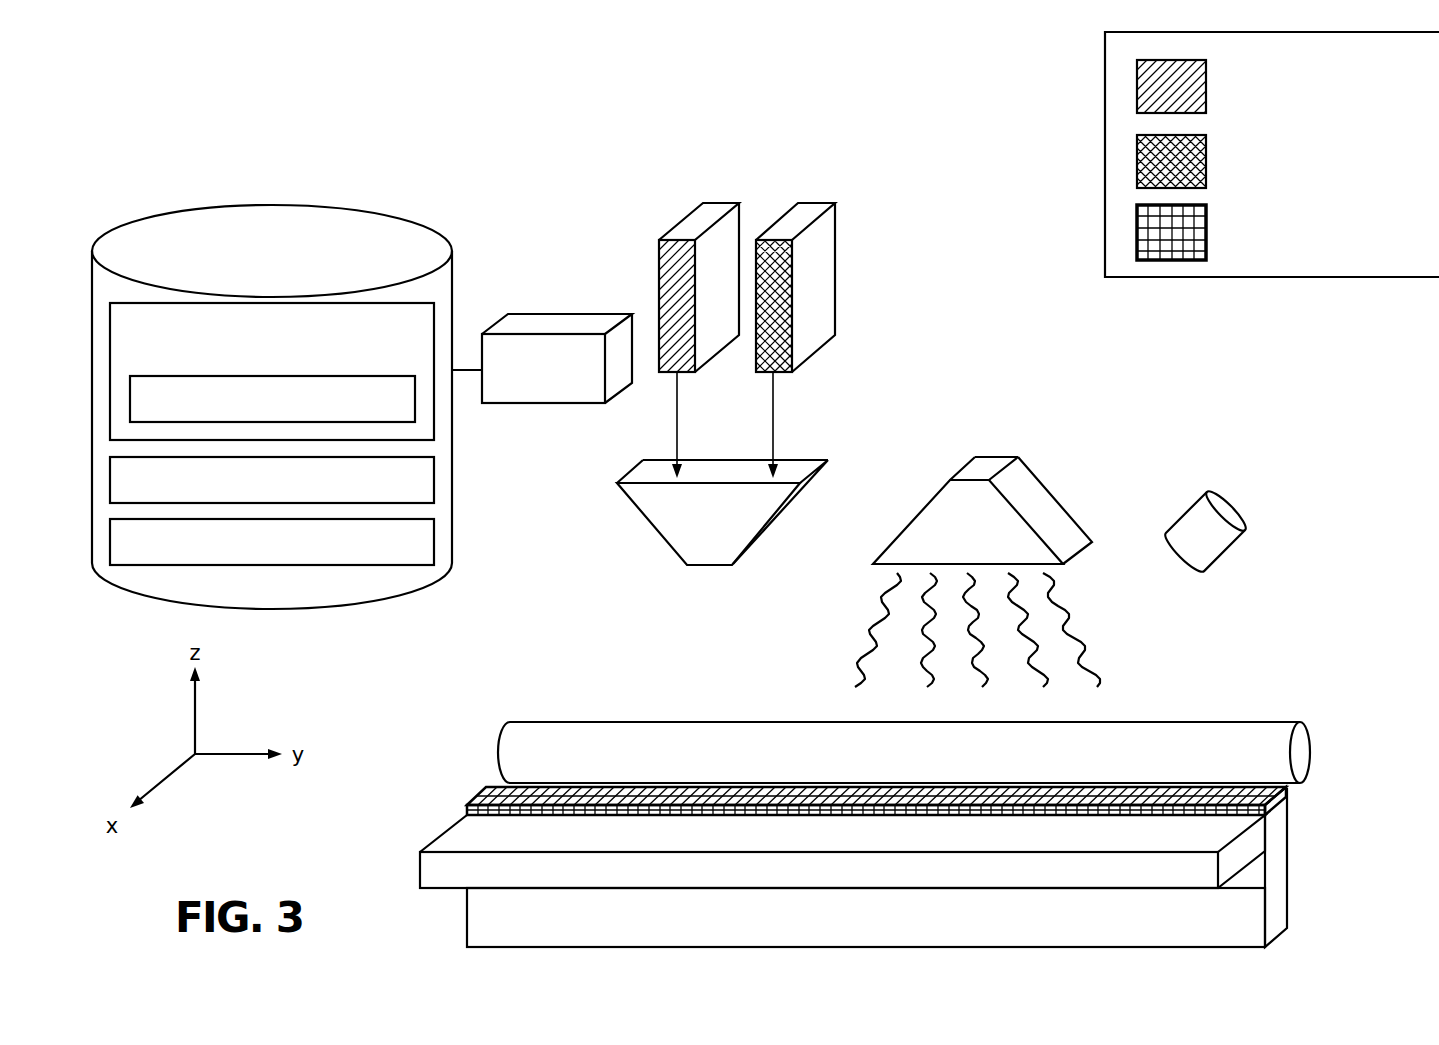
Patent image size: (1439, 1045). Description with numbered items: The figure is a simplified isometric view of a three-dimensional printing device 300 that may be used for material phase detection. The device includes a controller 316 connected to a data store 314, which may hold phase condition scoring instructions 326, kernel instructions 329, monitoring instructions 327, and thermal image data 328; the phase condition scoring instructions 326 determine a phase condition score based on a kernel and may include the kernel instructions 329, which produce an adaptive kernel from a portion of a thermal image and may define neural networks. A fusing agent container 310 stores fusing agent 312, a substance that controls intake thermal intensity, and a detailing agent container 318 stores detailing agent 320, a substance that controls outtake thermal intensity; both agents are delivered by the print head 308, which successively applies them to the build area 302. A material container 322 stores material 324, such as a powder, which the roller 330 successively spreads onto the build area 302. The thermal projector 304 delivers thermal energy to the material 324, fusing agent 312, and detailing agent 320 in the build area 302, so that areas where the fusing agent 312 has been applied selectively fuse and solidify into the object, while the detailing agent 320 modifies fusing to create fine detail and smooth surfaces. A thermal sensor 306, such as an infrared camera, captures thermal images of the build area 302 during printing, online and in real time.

The 3D printing device 300 is at (236, 143).
The data store 314 is at (368, 210).
The phase condition scoring instructions 326 is at (272, 371).
The kernel instructions 329 is at (272, 399).
The monitoring instructions 327 is at (272, 480).
The thermal image data 328 is at (272, 542).
The controller 316 is at (557, 358).
The fusing agent container 310 is at (658, 275).
The detailing agent container 318 is at (838, 262).
The fusing agent 312 is at (1267, 87).
The detailing agent 320 is at (1273, 161).
The material 324 is at (1265, 232).
The print head 308 is at (657, 535).
The thermal projector 304 is at (978, 457).
The thermal sensor 306 is at (1230, 517).
The roller 330 is at (1237, 722).
The build area 302 is at (842, 851).
The material container 322 is at (1287, 867).